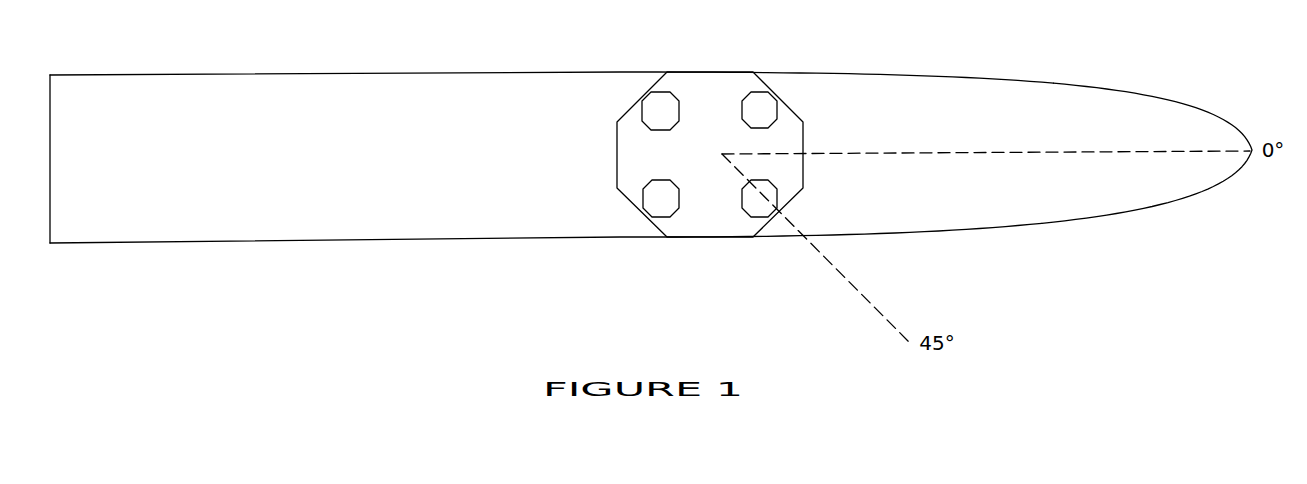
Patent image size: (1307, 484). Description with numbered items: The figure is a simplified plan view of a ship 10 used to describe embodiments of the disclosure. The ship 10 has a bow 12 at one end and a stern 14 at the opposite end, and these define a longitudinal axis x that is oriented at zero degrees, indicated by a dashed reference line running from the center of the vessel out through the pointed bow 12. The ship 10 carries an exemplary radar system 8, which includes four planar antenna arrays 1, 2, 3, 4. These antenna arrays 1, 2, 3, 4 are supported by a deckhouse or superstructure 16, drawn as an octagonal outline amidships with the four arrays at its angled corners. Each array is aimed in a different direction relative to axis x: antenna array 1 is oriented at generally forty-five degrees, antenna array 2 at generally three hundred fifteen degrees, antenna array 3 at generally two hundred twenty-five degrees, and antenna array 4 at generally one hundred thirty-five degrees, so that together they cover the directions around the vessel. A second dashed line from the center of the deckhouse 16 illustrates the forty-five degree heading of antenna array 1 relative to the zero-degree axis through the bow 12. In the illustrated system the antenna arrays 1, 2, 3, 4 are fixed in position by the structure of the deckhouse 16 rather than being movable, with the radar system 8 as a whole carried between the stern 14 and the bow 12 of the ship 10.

The antenna array 1 is at (748, 210).
The antenna array 2 is at (745, 100).
The antenna array 3 is at (663, 100).
The antenna array 4 is at (663, 210).
The radar system 8 is at (692, 48).
The ship 10 is at (709, 294).
The bow 12 is at (1147, 153).
The stern 14 is at (153, 243).
The deckhouse 16 is at (632, 165).